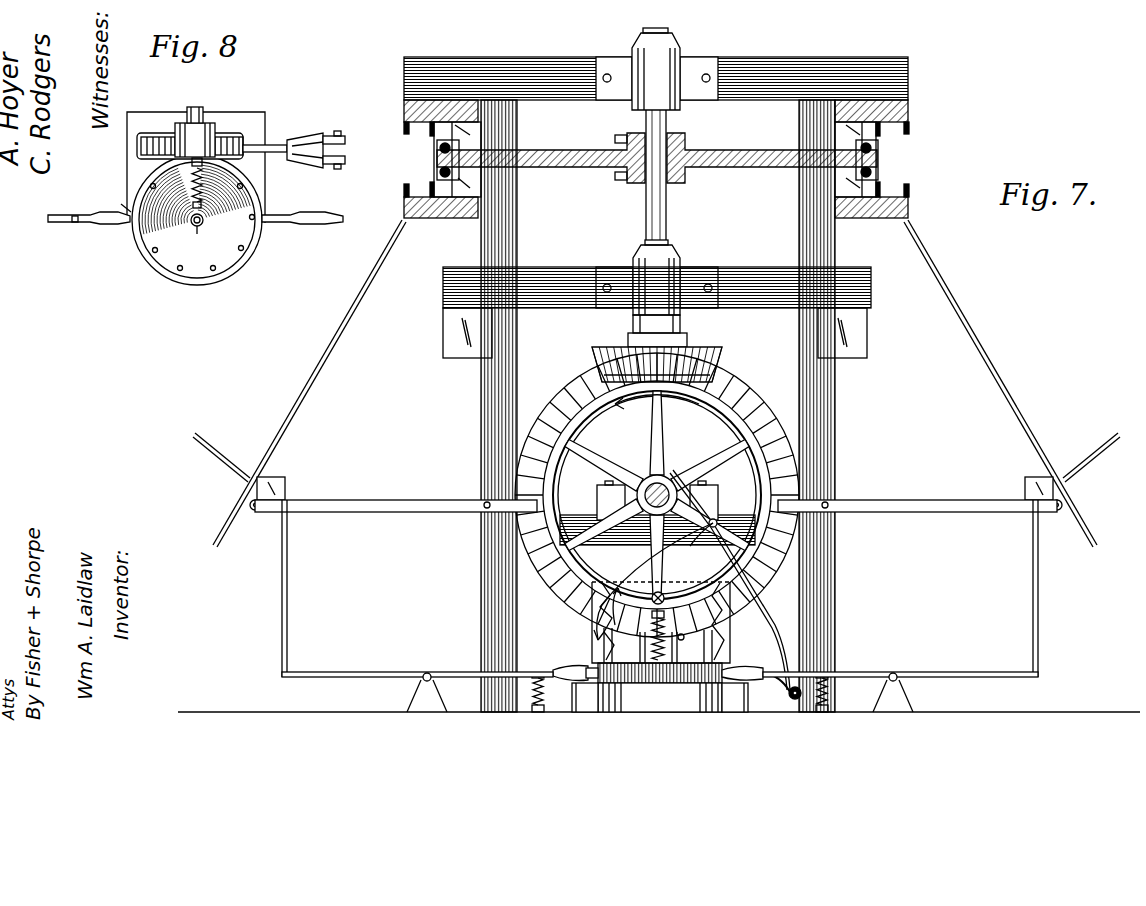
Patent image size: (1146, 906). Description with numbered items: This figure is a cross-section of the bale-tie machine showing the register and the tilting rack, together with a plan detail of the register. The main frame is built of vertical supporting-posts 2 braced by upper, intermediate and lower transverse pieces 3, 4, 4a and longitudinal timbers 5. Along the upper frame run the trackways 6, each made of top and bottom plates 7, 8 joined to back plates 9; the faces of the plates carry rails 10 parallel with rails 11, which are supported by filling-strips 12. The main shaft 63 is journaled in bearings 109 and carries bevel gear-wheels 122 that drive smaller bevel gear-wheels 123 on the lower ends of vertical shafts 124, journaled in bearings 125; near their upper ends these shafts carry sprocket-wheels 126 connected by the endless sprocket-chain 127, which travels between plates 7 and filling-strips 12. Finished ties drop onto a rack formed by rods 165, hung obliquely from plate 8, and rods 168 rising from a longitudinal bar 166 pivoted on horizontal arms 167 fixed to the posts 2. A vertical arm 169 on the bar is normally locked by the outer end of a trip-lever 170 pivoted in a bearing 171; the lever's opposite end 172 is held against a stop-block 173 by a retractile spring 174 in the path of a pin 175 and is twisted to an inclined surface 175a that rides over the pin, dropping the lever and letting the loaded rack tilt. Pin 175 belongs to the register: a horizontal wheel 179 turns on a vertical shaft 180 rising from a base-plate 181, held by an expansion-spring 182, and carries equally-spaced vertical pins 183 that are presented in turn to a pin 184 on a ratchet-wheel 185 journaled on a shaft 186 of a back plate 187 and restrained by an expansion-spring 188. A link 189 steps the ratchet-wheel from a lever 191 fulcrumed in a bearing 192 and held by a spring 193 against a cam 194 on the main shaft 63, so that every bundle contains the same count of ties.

In FIG. 7, the vertical supporting-posts 2 is at (481, 432).
In FIG. 7, the upper transverse piece 3 is at (553, 58).
In FIG. 7, the intermediate transverse piece 4 is at (552, 266).
In FIG. 7, the lower transverse piece 4a is at (579, 520).
In FIG. 7, the longitudinal timbers 5 is at (443, 336).
In FIG. 7, the trackways 6 is at (420, 160).
In FIG. 7, the top plate 7 is at (410, 103).
In FIG. 7, the bottom plate 8 is at (437, 218).
In FIG. 7, the back plates 9 is at (476, 186).
In FIG. 7, the rails 10 is at (404, 125).
In FIG. 7, the rails 11 is at (430, 130).
In FIG. 7, the filling-strips 12 is at (454, 200).
In FIG. 7, the main shaft 63 is at (664, 483).
In FIG. 8, the main shaft 63 is at (194, 106).
In FIG. 7, the bearings 109 is at (600, 488).
In FIG. 7, the bevel gear-wheels 122 is at (567, 393).
In FIG. 7, the smaller bevel gear-wheels 123 is at (602, 350).
In FIG. 7, the vertical shafts 124 is at (646, 210).
In FIG. 7, the bearings 125 is at (616, 57).
In FIG. 7, the sprocket-wheels 126 is at (549, 149).
In FIG. 7, the endless sprocket-chain 127 is at (877, 148).
In FIG. 7, the rods 165 is at (655, 383).
In FIG. 7, the longitudinal bar 166 is at (277, 477).
In FIG. 7, the horizontal arms 167 is at (388, 499).
In FIG. 7, the rods 168 is at (213, 434).
In FIG. 7, the vertical arm 169 is at (282, 606).
In FIG. 7, the trip-lever 170 is at (343, 671).
In FIG. 8, the trip-lever 170 is at (65, 223).
In FIG. 7, the bearing 171 is at (427, 673).
In FIG. 7, the opposite end of trip-lever 172 is at (585, 668).
In FIG. 7, the stop-block 173 is at (580, 700).
In FIG. 7, the retractile spring 174 is at (536, 708).
In FIG. 7, the pin 175 is at (620, 684).
In FIG. 8, the pin 175 is at (122, 204).
In FIG. 7, the inclined surface 175a is at (565, 684).
In FIG. 7, the horizontal wheel 179 is at (663, 684).
In FIG. 7, the vertical shaft 180 is at (664, 600).
In FIG. 8, the vertical shaft 180 is at (198, 228).
In FIG. 7, the base-plate 181 is at (706, 690).
In FIG. 8, the base-plate 181 is at (240, 270).
In FIG. 7, the expansion-spring 182 is at (650, 620).
In FIG. 7, the vertical pins 183 is at (603, 640).
In FIG. 8, the vertical pins 183 is at (212, 271).
In FIG. 7, the pin 184 is at (694, 650).
In FIG. 8, the pin 184 is at (233, 156).
In FIG. 7, the ratchet-wheel 185 is at (624, 560).
In FIG. 8, the ratchet-wheel 185 is at (140, 146).
In FIG. 7, the shaft 186 is at (658, 592).
In FIG. 8, the shaft 186 is at (217, 221).
In FIG. 7, the back plate 187 is at (730, 645).
In FIG. 8, the back plate 187 is at (243, 106).
In FIG. 8, the expansion-spring 188 is at (189, 184).
In FIG. 7, the link 189 is at (692, 552).
In FIG. 8, the link 189 is at (137, 158).
In FIG. 7, the lever 191 is at (762, 622).
In FIG. 8, the lever 191 is at (278, 153).
In FIG. 7, the bearing 192 is at (797, 700).
In FIG. 8, the bearing 192 is at (340, 132).
In FIG. 7, the spring 193 is at (781, 690).
In FIG. 8, the spring 193 is at (298, 133).
In FIG. 7, the cam 194 is at (651, 483).
In FIG. 8, the cam 194 is at (195, 140).